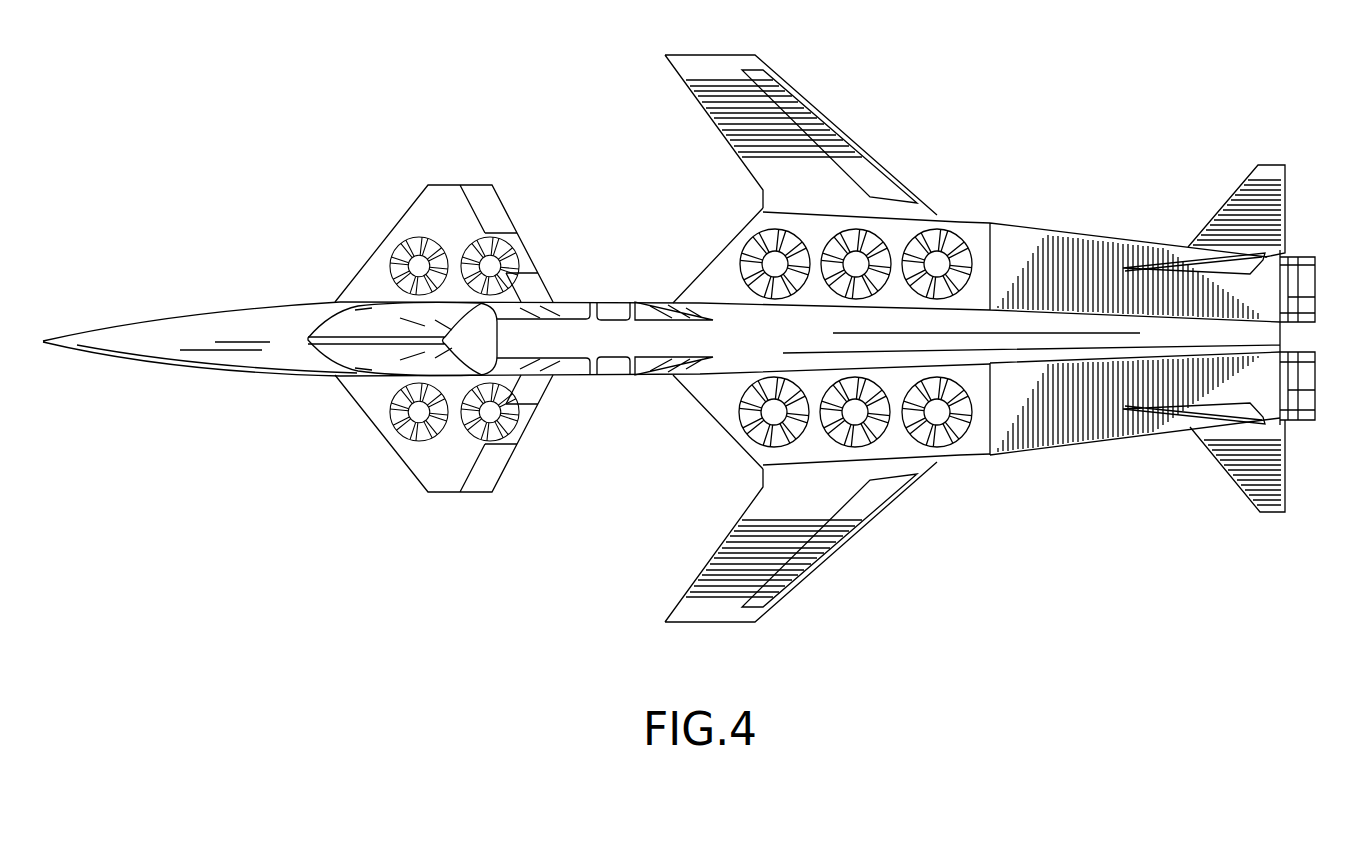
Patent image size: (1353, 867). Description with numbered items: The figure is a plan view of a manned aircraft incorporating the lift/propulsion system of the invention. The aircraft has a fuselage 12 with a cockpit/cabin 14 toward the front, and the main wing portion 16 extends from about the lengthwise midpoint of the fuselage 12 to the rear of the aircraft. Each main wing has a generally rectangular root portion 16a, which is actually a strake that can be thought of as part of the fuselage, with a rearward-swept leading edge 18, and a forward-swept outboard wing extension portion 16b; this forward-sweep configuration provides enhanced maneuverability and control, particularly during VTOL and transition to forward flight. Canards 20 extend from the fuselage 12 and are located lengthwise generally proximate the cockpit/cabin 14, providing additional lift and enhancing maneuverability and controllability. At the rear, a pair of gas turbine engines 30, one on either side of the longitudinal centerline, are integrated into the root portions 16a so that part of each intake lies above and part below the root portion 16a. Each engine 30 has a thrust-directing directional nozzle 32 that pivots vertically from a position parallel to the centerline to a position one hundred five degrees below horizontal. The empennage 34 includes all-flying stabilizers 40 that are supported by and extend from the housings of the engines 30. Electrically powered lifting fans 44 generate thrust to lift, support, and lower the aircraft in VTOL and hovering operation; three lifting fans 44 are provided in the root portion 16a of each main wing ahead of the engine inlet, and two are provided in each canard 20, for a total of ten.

The fuselage 12 is at (568, 378).
The cockpit/cabin 14 is at (320, 285).
The main wing portion 16 is at (797, 332).
The root portion 16a is at (798, 337).
The outboard wing extension portion 16b is at (651, 55).
The leading edge 18 is at (678, 300).
The canard 20 is at (396, 226).
The gas turbine engine 30 is at (1072, 232).
The thrust-directing directional nozzle 32 is at (1306, 255).
The empennage 34 is at (1253, 533).
The all-flying stabilizer 40 is at (1240, 202).
The lifting fan 44 is at (392, 251).